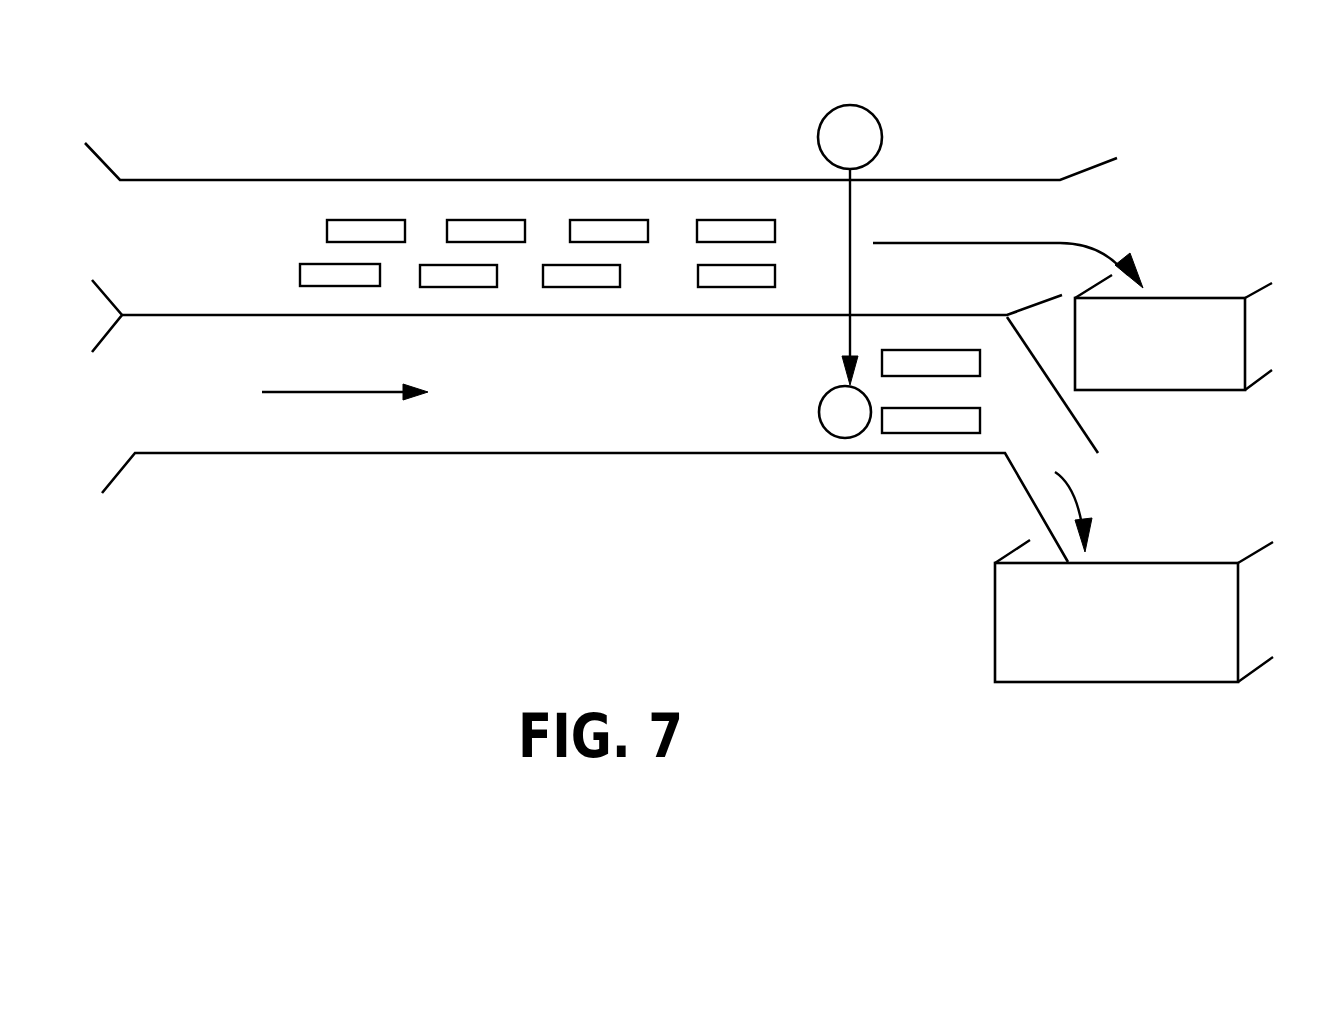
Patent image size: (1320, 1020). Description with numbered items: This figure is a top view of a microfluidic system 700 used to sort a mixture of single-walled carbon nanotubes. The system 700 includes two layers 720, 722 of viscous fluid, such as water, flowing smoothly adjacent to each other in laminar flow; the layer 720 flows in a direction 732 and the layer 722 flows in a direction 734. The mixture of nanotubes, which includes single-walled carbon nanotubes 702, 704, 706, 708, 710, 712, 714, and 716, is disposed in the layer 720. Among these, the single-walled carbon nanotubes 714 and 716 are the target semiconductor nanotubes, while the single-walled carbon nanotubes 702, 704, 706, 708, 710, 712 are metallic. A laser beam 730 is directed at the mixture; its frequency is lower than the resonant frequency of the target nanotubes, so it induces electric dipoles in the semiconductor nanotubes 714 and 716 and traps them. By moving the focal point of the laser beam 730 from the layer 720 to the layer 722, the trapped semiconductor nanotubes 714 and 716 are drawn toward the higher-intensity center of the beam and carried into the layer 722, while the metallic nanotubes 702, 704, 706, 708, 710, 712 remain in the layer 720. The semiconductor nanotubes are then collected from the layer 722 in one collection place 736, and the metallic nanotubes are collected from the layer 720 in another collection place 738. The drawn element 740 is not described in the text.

The microfluidic system 700 is at (601, 352).
The single-walled carbon nanotube 702 is at (367, 219).
The single-walled carbon nanotube 704 is at (299, 278).
The single-walled carbon nanotube 706 is at (480, 219).
The single-walled carbon nanotube 708 is at (467, 288).
The single-walled carbon nanotube 710 is at (600, 219).
The single-walled carbon nanotube 712 is at (587, 288).
The single-walled carbon nanotube 714 is at (740, 219).
The single-walled carbon nanotube 716 is at (720, 288).
The layer 720 is at (197, 261).
The layer 722 is at (197, 382).
The laser beam 730 is at (818, 137).
The direction 732 is at (920, 245).
The direction 734 is at (348, 395).
The collection place 736 is at (1107, 683).
The collection place 738 is at (1188, 391).
The laser beam 740 is at (847, 335).